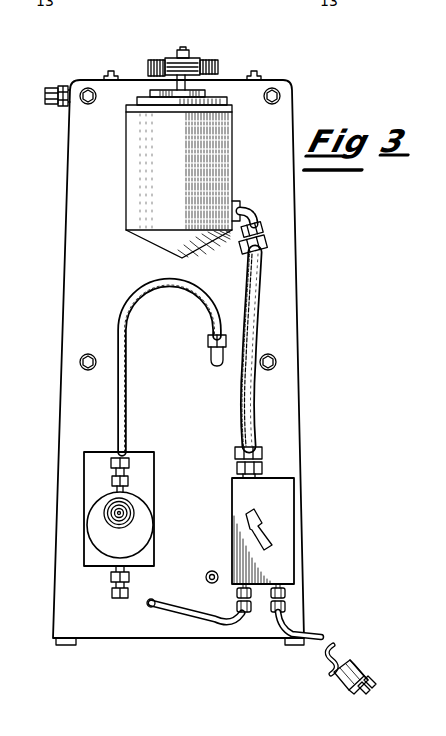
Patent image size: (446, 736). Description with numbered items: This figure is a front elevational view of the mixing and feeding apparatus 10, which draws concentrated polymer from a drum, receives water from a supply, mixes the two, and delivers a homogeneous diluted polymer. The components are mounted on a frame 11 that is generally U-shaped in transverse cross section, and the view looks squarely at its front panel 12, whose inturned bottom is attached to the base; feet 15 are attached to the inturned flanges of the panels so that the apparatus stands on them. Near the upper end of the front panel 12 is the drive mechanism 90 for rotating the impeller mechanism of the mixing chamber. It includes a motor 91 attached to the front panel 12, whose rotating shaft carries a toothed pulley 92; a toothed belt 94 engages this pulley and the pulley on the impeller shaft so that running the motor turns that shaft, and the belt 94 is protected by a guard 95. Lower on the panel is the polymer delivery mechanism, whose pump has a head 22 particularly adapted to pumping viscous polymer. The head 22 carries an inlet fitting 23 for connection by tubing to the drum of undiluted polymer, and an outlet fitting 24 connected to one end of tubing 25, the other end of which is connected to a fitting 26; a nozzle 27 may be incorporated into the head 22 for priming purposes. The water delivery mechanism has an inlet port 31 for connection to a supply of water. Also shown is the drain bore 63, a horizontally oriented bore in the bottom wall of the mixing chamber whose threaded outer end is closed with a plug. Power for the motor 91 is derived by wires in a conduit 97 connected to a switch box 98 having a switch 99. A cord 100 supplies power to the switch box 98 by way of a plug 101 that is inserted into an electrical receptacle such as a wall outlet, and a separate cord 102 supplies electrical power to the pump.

The mixing and feeding apparatus 10 is at (328, 318).
The frame 11 is at (300, 236).
The front panel 12 is at (296, 422).
The feet 15 is at (63, 648).
The head 22 is at (148, 532).
The inlet fitting 23 is at (110, 594).
The outlet fitting 24 is at (130, 478).
The tubing 25 is at (127, 372).
The fitting 26 is at (211, 366).
The nozzle 27 is at (130, 500).
The inlet port 31 is at (205, 577).
The drain bore 63 is at (55, 86).
The drive mechanism 90 is at (233, 140).
The motor 91 is at (233, 182).
The toothed pulley 92 is at (205, 79).
The toothed belt 94 is at (172, 60).
The guard 95 is at (202, 60).
The conduit 97 is at (262, 300).
The switch box 98 is at (290, 500).
The switch 99 is at (272, 538).
The cord 100 is at (318, 635).
The plug 101 is at (352, 666).
The cord 102 is at (204, 622).